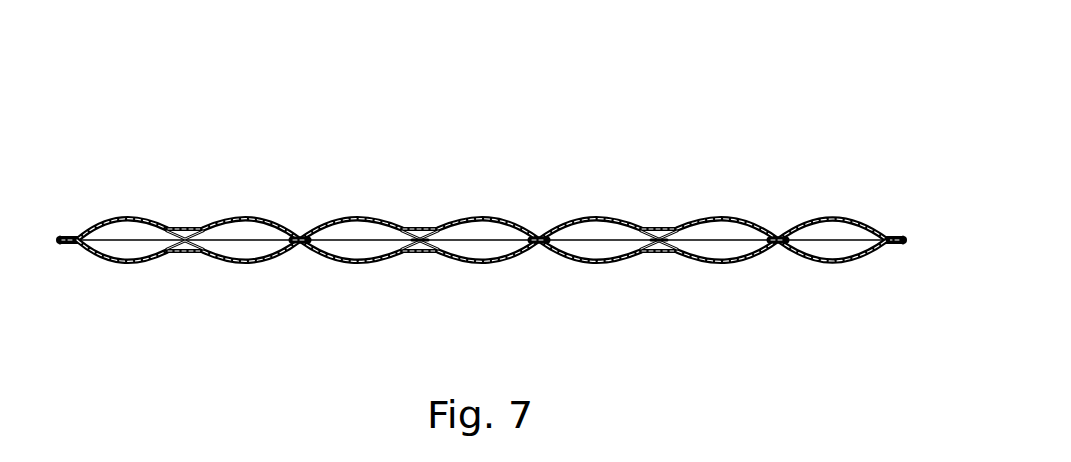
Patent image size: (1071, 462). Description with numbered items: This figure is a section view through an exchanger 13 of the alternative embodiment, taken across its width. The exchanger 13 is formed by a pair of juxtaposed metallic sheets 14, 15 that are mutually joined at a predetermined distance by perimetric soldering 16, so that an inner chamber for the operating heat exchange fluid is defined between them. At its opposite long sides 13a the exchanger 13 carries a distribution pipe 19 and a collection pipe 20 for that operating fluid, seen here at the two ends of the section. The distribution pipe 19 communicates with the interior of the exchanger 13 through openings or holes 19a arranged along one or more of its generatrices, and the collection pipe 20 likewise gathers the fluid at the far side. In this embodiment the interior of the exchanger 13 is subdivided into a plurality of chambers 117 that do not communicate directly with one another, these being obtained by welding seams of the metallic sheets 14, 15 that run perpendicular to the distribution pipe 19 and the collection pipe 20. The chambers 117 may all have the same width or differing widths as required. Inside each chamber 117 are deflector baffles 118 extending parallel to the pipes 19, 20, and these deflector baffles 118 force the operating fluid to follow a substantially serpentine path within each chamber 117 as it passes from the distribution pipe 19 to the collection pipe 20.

The exchanger 13 is at (481, 182).
The long sides 13a is at (72, 236).
The metallic sheet 14 is at (480, 262).
The metallic sheet 15 is at (478, 218).
The perimetric soldering 16 is at (62, 246).
The distribution pipe 19 is at (128, 250).
The openings or holes 19a is at (187, 250).
The collection pipe 20 is at (822, 247).
The chambers 117 is at (246, 237).
The deflector baffles 118 is at (300, 245).